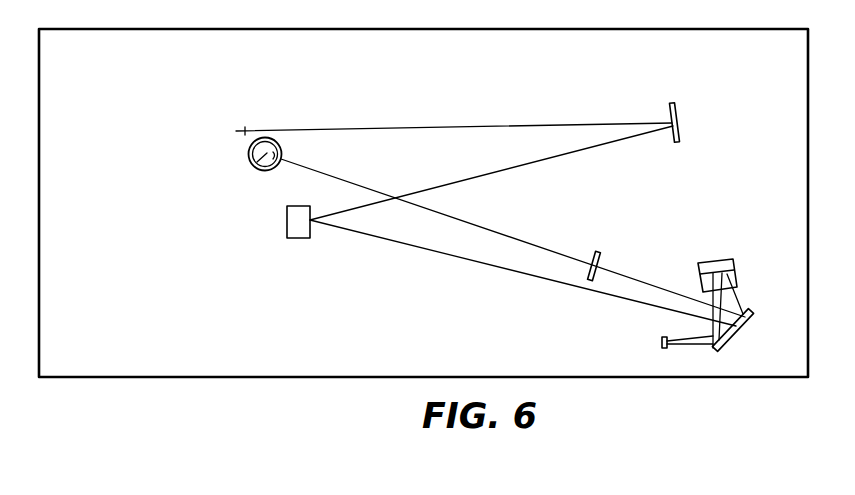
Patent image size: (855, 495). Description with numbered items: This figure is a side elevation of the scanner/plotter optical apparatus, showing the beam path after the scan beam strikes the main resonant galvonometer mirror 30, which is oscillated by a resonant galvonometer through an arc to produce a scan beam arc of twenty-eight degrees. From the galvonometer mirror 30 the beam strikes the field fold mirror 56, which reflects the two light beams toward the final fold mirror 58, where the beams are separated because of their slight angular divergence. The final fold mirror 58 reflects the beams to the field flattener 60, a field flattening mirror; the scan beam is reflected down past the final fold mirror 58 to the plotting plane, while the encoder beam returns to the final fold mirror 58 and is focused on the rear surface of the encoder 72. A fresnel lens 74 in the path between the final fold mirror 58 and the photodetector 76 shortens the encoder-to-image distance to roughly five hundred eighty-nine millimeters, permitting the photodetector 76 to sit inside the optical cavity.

The main resonant galvonometer mirror 30 is at (682, 131).
The field fold mirror 56 is at (287, 228).
The final fold mirror 58 is at (733, 337).
The field flattener 60 is at (733, 263).
The encoder 72 is at (662, 343).
The fresnel lens 74 is at (600, 262).
The photodetector 76 is at (254, 163).